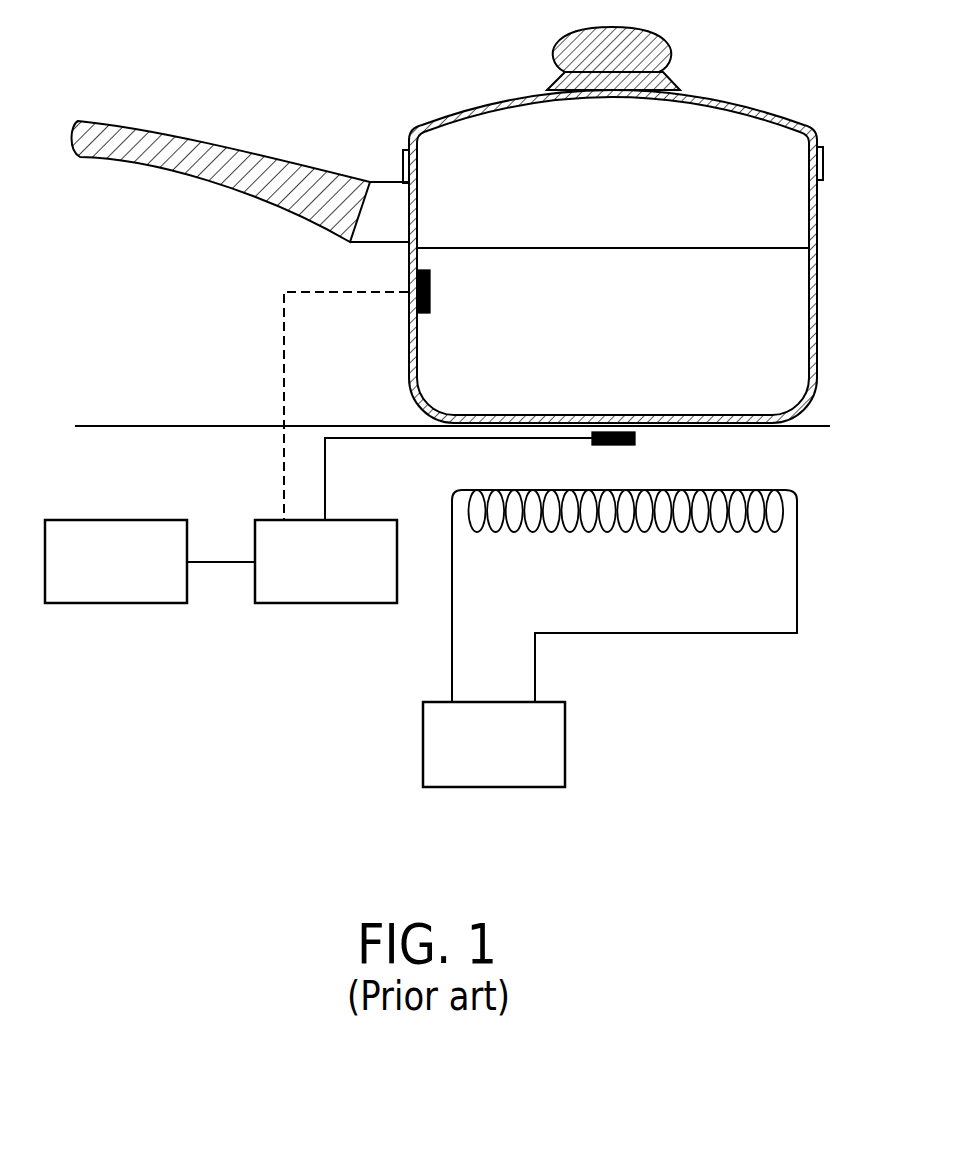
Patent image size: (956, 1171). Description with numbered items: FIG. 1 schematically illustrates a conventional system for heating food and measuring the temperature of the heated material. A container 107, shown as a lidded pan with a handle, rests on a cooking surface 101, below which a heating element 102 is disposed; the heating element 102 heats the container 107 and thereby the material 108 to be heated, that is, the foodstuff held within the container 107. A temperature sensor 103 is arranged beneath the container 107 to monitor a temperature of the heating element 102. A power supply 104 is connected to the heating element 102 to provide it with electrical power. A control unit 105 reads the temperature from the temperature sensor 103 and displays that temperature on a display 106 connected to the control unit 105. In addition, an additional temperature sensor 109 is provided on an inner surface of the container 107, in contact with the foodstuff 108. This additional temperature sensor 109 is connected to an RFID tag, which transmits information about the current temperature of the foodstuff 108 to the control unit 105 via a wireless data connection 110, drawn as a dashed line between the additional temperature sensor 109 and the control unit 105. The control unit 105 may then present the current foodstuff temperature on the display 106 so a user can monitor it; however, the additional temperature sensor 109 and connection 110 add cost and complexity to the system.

The cooking surface 101 is at (164, 426).
The heating element 102 is at (613, 546).
The temperature sensor 103 is at (617, 432).
The power supply 104 is at (485, 787).
The control unit 105 is at (322, 603).
The display 106 is at (108, 603).
The container 107 is at (400, 109).
The material to be heated 108 is at (643, 248).
The additional temperature sensor 109 is at (430, 293).
The wireless data connection 110 is at (284, 322).